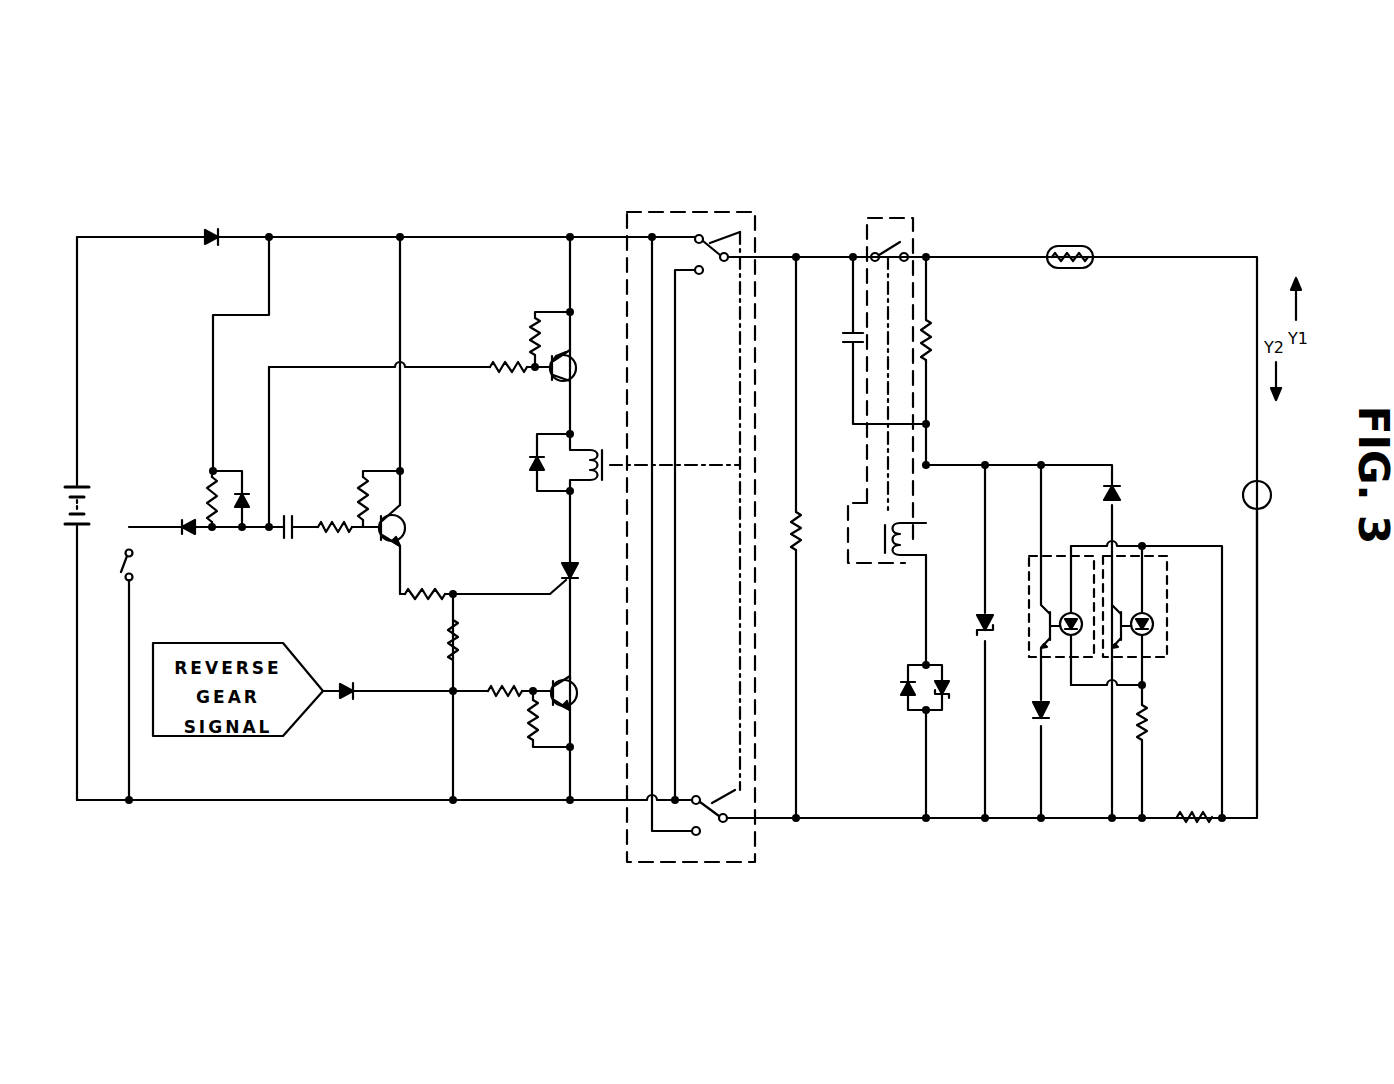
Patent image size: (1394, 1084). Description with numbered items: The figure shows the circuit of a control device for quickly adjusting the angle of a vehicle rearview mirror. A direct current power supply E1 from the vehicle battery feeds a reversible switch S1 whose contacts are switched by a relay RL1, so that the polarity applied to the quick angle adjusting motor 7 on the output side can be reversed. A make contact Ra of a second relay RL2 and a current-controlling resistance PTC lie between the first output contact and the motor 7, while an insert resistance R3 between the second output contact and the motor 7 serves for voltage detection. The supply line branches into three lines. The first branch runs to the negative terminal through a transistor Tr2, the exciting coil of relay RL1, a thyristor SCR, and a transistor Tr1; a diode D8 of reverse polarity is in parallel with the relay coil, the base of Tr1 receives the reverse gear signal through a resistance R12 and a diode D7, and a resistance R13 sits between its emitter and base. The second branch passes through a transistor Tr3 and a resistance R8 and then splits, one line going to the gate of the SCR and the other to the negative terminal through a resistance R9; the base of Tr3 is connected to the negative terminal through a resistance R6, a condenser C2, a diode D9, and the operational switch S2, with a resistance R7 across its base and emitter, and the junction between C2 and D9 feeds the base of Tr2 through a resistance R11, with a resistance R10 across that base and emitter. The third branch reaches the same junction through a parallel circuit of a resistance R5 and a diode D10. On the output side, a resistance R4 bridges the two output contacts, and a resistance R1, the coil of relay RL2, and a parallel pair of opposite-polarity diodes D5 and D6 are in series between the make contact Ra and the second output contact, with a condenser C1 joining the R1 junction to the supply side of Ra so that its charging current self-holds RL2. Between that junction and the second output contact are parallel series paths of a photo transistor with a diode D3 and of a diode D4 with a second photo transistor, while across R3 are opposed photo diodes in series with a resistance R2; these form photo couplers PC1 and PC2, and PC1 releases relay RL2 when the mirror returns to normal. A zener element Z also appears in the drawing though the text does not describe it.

The quick angle adjusting motor 7 is at (1245, 486).
The reversible switch S1 is at (693, 225).
The operational switch for quick angle adjustment S2 is at (136, 568).
The direct current power supply E1 is at (92, 465).
The make contact Ra is at (890, 381).
The relay RL1 is at (655, 466).
The relay RL2 is at (867, 524).
The resistance R1 is at (941, 340).
The resistance R2 is at (1156, 722).
The insert resistance R3 is at (1191, 804).
The resistance R4 is at (808, 540).
The resistance R5 is at (194, 499).
The resistance R6 is at (335, 543).
The resistance R7 is at (361, 497).
The resistance R8 is at (422, 581).
The resistance R9 is at (435, 640).
The resistance R10 is at (515, 332).
The resistance R11 is at (508, 383).
The resistance R12 is at (503, 676).
The resistance R13 is at (518, 725).
The condenser C1 is at (840, 320).
The condenser C2 is at (280, 542).
The diode D3 is at (1029, 719).
The diode D4 is at (1100, 493).
The diode D5 is at (953, 678).
The diode D6 is at (907, 687).
The diode D7 is at (340, 677).
The diode D8 is at (534, 462).
The diode D9 is at (182, 543).
The diode D10 is at (238, 486).
The transistor Tr1 is at (579, 702).
The transistor Tr2 is at (568, 358).
The transistor Tr3 is at (408, 523).
The thyristor SCR is at (588, 558).
The zener diode Z is at (975, 628).
The resistance for current control PTC is at (1070, 246).
The photo coupler PC1 is at (1065, 617).
The photo coupler PC2 is at (1139, 617).